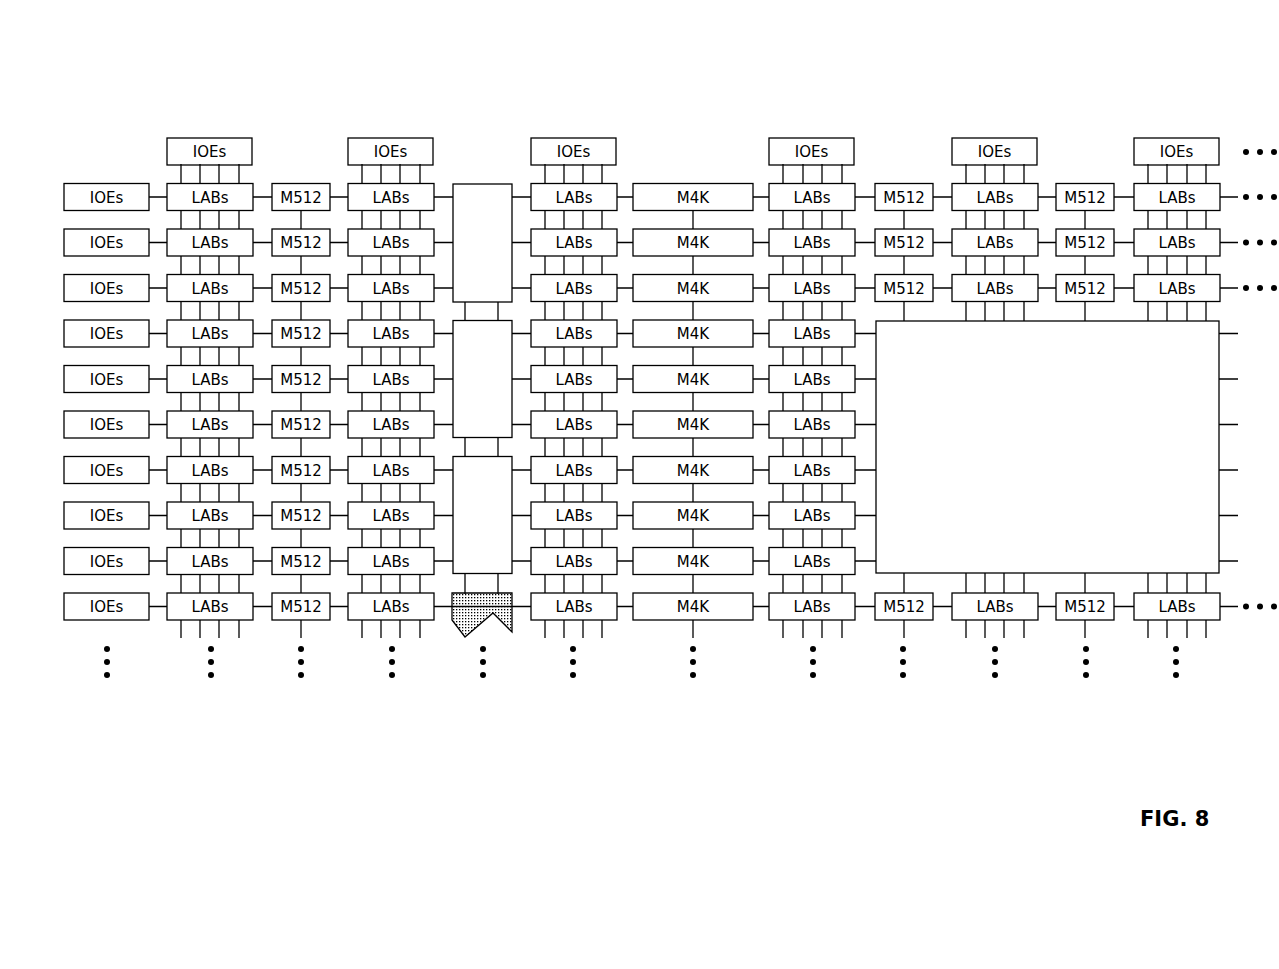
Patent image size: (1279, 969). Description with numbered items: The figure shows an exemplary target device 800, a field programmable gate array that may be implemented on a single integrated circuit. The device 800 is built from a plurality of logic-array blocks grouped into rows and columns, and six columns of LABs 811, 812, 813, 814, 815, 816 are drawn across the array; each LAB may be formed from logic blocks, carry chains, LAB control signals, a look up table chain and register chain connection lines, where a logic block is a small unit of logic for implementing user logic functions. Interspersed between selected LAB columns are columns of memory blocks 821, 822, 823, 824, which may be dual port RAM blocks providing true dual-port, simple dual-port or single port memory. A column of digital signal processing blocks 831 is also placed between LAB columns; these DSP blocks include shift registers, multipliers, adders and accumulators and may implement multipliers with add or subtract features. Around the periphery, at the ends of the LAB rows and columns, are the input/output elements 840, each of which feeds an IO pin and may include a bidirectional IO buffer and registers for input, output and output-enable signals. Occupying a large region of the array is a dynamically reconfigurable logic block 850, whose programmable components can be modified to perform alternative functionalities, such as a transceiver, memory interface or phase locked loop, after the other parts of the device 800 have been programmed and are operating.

The device 800 is at (126, 94).
The input/output elements (IOEs) 840 is at (154, 152).
The column of LABs 811 is at (195, 656).
The column of LABs 812 is at (378, 656).
The column of LABs 813 is at (558, 657).
The column of LABs 814 is at (784, 656).
The column of LABs 815 is at (975, 656).
The column of LABs 816 is at (1154, 656).
The column of memory blocks 821 is at (318, 164).
The column of memory blocks 822 is at (698, 164).
The column of memory blocks 823 is at (915, 164).
The column of memory blocks 824 is at (1094, 164).
The column of DSP blocks 831 is at (493, 164).
The dynamically reconfigurable logic block 850 is at (1152, 500).